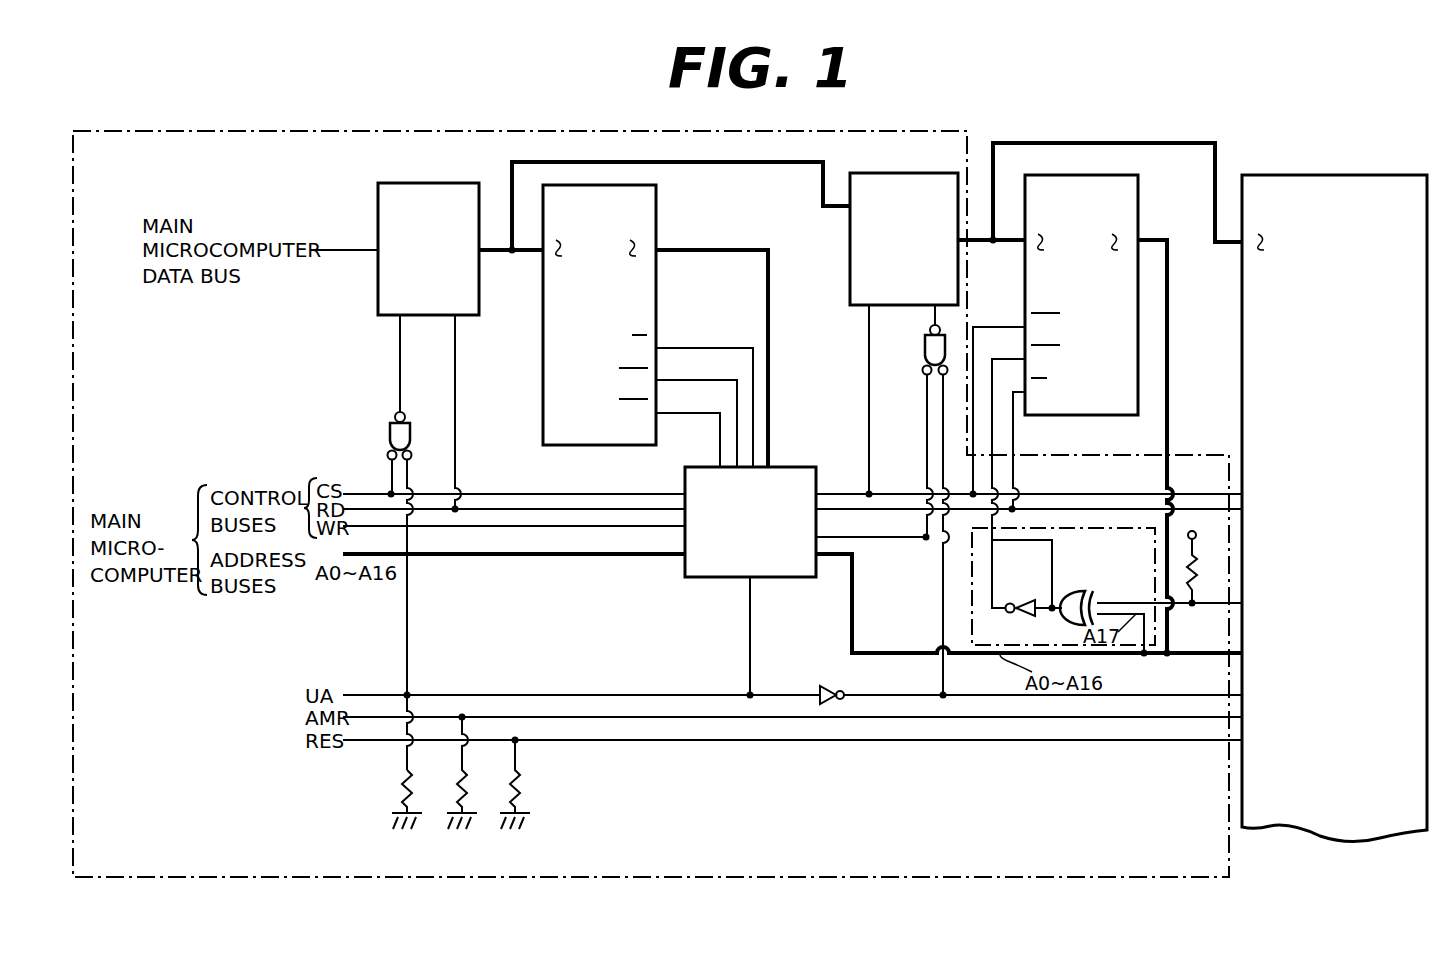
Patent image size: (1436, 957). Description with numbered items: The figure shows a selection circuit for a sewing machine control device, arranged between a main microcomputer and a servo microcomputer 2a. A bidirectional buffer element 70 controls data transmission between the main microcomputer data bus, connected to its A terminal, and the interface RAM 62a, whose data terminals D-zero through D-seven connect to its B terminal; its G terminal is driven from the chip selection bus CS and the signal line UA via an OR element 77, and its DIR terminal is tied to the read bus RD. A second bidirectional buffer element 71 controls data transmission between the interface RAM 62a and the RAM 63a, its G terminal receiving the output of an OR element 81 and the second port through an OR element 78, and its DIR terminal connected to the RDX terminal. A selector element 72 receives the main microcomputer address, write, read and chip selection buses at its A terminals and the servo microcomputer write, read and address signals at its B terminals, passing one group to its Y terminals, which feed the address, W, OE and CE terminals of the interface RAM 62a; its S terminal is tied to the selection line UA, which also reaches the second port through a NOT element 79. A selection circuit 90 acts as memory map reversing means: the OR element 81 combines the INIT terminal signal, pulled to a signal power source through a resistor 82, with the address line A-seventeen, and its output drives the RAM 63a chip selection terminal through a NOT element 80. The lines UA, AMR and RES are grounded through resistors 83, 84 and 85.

The servo microcomputer 2a is at (1412, 175).
The interface RAM 62a is at (656, 190).
The RAM 63a is at (1138, 186).
The buffer element 70 is at (462, 183).
The buffer element 71 is at (850, 300).
The selector element 72 is at (793, 467).
The OR element 77 is at (390, 438).
The OR element 78 is at (925, 358).
The NOT element 79 is at (826, 688).
The NOT element 80 is at (1010, 613).
The OR element 81 is at (1074, 591).
The resistor 82 is at (1198, 580).
The resistor 83 is at (400, 790).
The resistor 84 is at (470, 786).
The resistor 85 is at (526, 788).
The selection circuit 90 is at (1033, 587).